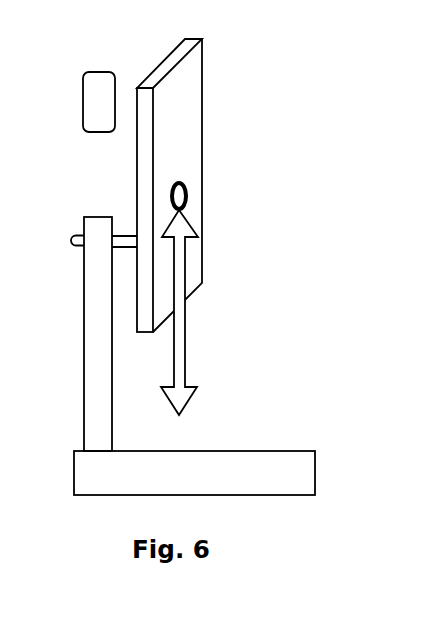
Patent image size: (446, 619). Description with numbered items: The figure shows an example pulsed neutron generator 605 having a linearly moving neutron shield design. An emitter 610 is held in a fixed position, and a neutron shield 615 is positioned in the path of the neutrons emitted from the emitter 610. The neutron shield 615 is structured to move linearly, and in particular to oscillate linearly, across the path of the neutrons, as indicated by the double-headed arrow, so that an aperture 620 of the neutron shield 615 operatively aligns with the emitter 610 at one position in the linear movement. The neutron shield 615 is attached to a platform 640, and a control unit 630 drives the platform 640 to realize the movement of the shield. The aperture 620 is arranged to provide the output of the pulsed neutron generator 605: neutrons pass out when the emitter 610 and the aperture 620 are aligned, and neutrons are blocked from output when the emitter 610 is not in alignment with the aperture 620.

The pulsed neutron generator 605 is at (309, 86).
The emitter 610 is at (82, 105).
The neutron shield 615 is at (187, 110).
The aperture 620 is at (188, 197).
The control unit 630 is at (315, 473).
The platform 640 is at (127, 232).